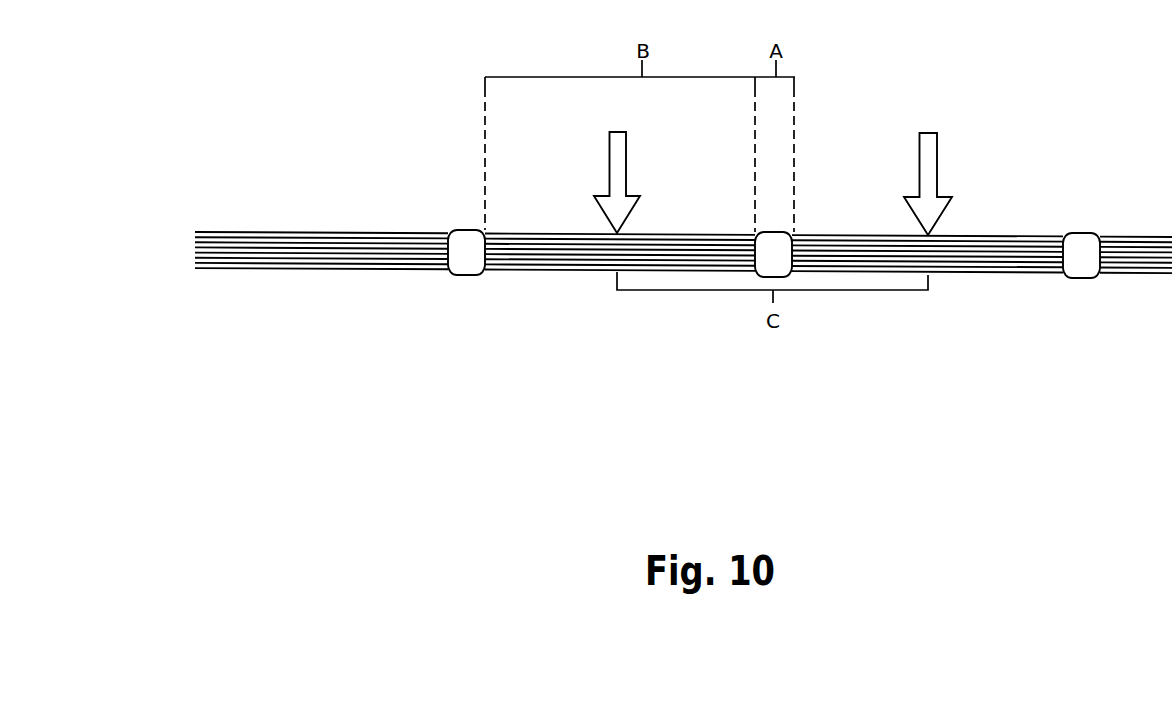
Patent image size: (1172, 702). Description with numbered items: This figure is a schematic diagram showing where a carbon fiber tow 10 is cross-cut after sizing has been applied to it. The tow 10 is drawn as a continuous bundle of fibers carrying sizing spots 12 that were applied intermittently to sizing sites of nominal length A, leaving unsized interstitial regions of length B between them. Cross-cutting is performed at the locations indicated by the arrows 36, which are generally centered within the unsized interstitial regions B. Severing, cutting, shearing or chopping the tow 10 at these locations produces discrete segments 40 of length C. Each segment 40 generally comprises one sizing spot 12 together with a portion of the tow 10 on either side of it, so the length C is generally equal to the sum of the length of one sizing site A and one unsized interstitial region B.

The carbon fiber tow 10 is at (405, 272).
The sizing spot 12 is at (773, 232).
The arrow 36 is at (628, 169).
The segment 40 is at (653, 233).